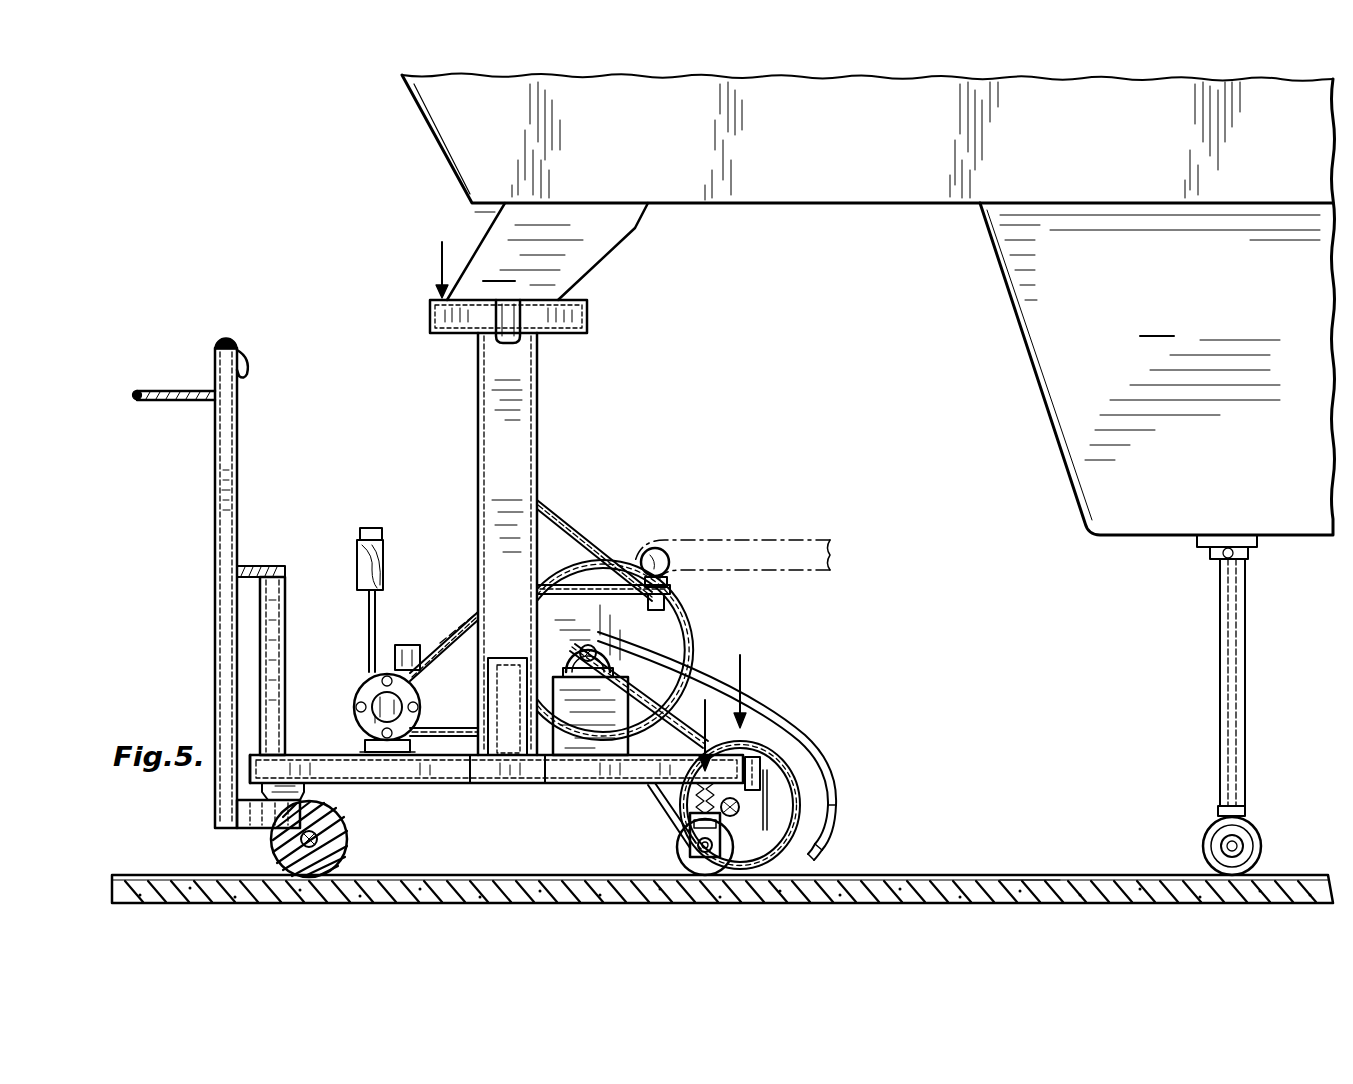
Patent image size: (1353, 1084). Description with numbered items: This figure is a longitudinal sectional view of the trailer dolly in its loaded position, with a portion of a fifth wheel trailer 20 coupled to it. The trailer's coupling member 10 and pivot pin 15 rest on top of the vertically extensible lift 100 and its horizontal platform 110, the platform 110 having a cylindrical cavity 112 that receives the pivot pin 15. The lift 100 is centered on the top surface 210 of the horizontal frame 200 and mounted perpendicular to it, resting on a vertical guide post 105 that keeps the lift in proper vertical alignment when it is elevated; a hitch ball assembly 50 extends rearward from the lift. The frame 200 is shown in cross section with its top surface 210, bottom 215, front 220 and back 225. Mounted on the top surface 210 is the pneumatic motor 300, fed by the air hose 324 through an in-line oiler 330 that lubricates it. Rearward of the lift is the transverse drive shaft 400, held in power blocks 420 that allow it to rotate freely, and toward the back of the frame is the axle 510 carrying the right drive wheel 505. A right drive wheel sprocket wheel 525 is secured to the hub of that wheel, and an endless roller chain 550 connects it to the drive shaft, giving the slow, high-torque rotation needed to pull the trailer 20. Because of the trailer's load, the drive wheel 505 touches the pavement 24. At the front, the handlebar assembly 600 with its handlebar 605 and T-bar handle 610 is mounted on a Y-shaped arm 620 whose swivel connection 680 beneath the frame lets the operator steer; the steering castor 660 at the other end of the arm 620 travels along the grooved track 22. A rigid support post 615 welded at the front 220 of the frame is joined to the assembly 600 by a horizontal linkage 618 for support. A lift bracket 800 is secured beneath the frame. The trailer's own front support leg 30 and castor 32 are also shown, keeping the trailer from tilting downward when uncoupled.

The coupling member 10 is at (867, 187).
The pivot pin 15 is at (502, 335).
The fifth wheel trailer 20 is at (1157, 307).
The grooved track 22 is at (1040, 875).
The pavement 24 is at (1108, 885).
The front support leg 30 is at (1218, 626).
The castor 32 is at (1205, 842).
The hitch ball assembly 50 is at (584, 525).
The vertically extensible lift 100 is at (555, 453).
The vertical guide post 105 is at (492, 699).
The platform 110 is at (590, 321).
The cylindrical cavity 112 is at (545, 333).
The horizontal frame 200 is at (489, 793).
The top surface 210 is at (348, 758).
The bottom 215 is at (595, 786).
The front 220 is at (250, 768).
The back 225 is at (790, 762).
The pneumatic motor 300 is at (356, 699).
The air hose 324 is at (246, 366).
The in-line oiler 330 is at (352, 563).
The drive shaft 400 is at (660, 630).
The power blocks 420 is at (607, 697).
The right drive wheel 505 is at (812, 859).
The axle 510 is at (832, 825).
The right drive wheel sprocket wheel 525 is at (775, 800).
The endless roller chain 550 is at (775, 730).
The handlebar assembly 600 is at (248, 457).
The handlebar 605 is at (226, 339).
The T-bar handle 610 is at (137, 389).
The support post 615 is at (287, 662).
The horizontal linkage 618 is at (240, 569).
The Y-shaped arm 620 is at (264, 854).
The steering castor 660 is at (347, 858).
The swivel connection 680 is at (310, 790).
The lift bracket 800 is at (689, 843).